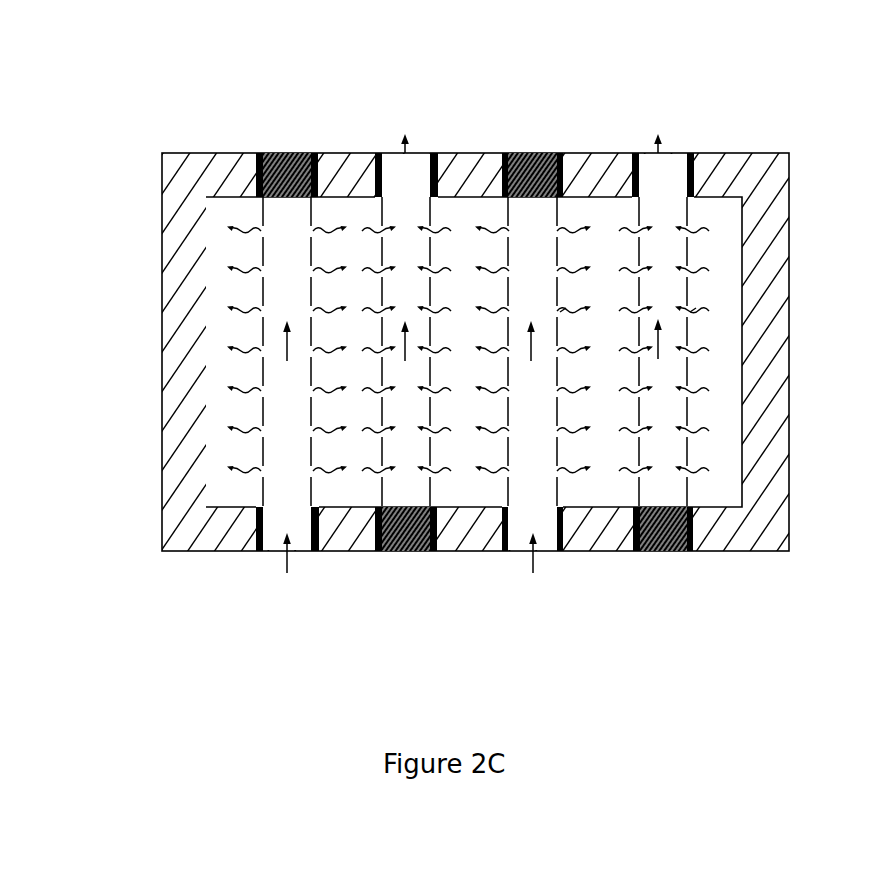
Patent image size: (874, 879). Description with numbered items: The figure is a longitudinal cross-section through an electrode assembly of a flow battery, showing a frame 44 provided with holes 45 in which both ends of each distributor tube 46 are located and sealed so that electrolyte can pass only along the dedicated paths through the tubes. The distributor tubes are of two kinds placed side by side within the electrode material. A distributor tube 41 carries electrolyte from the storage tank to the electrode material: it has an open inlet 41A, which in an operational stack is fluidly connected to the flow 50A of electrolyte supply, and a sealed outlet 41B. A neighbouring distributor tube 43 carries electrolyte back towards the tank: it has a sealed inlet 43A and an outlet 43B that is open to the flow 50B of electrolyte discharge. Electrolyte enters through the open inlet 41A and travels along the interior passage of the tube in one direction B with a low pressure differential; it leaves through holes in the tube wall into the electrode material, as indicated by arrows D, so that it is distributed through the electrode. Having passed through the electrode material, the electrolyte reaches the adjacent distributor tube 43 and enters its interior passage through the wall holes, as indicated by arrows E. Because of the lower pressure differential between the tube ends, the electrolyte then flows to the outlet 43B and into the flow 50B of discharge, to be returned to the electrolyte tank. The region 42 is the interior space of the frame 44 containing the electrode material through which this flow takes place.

The distributor tube 41 is at (557, 370).
The open inlet 41A is at (546, 552).
The sealed outlet 41B is at (524, 143).
The interior chamber 42 is at (228, 291).
The distributor tube 43 is at (688, 250).
The sealed inlet 43A is at (667, 558).
The outlet 43B is at (680, 143).
The frame 44 is at (183, 488).
The holes 45 is at (258, 153).
The distributor tube 46 is at (263, 412).
The flow of electrolyte supply 50A is at (493, 597).
The flow of electrolyte discharge 50B is at (480, 113).
The direction of electrolyte flow B is at (528, 401).
The arrows D is at (565, 310).
The arrows E is at (693, 310).